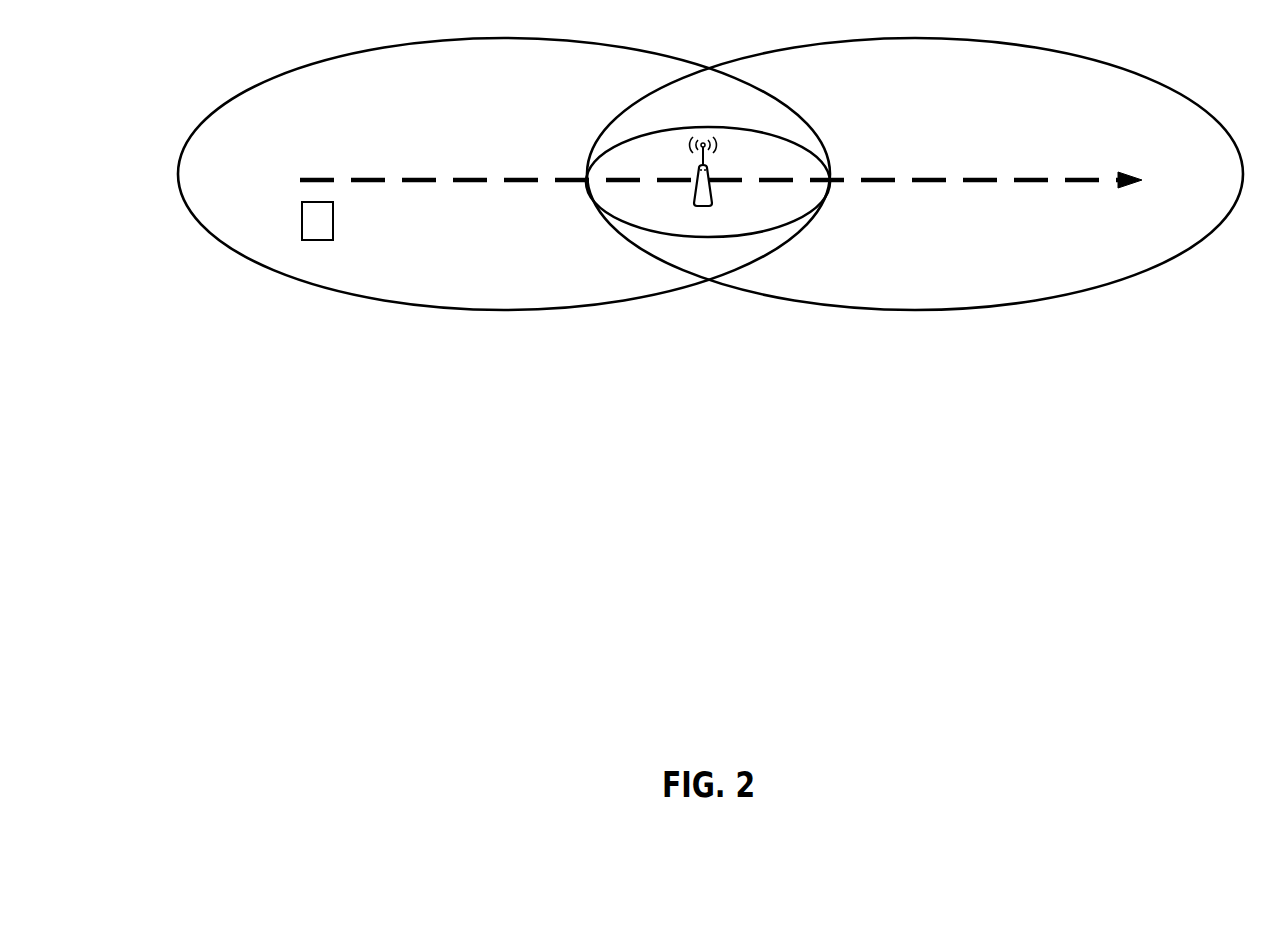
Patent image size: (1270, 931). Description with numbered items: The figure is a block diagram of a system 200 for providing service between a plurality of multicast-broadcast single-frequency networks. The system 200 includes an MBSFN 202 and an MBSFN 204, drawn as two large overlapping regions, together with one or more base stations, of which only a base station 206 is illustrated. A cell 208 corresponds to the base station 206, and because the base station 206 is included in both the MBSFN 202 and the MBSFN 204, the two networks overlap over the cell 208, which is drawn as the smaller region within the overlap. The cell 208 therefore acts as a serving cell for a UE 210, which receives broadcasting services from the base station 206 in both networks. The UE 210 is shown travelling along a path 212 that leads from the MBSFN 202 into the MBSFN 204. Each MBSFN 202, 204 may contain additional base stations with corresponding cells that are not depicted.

The system 200 is at (728, 416).
The MBSFN 202 is at (487, 311).
The MBSFN 204 is at (940, 310).
The base station 206 is at (709, 205).
The cell 208 is at (708, 127).
The UE 210 is at (333, 237).
The path 212 is at (985, 179).